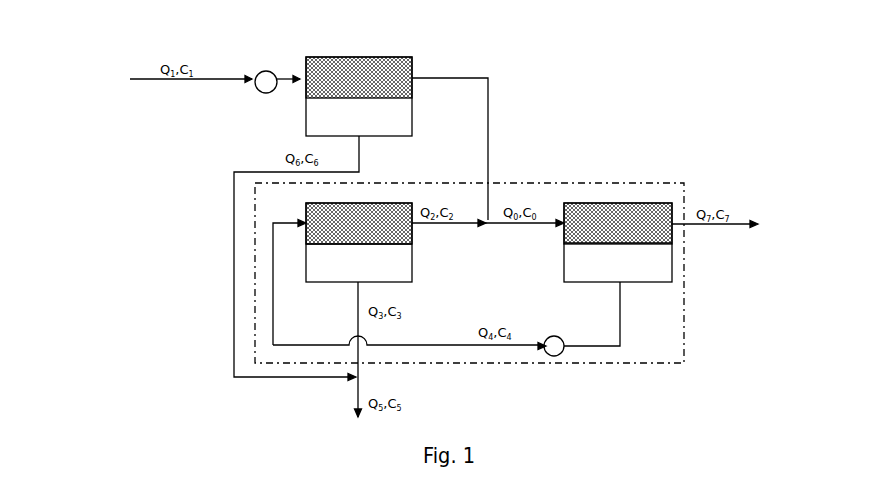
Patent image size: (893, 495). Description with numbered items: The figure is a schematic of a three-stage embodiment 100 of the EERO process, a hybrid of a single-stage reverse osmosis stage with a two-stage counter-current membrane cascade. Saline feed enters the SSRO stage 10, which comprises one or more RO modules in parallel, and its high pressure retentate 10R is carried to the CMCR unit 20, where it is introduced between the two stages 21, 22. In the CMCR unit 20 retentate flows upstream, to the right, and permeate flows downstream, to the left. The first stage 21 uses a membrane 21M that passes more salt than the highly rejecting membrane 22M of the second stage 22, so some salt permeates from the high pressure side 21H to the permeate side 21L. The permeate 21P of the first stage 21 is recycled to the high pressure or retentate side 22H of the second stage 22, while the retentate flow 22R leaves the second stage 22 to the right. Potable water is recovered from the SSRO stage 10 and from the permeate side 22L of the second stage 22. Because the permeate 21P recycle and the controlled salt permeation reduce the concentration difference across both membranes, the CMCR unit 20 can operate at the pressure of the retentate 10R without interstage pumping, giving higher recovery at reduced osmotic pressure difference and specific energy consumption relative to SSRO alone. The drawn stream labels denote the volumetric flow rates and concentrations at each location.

The water treatment system 100 is at (597, 65).
The SSRO stage 10 is at (353, 57).
The high pressure retentate 10R is at (489, 122).
The counter-current flow membrane cascade CMCR unit 20 is at (633, 183).
The stage 2 22 is at (306, 262).
The high pressure or retentate side of stage 2 22H is at (306, 214).
The highly rejecting membrane 22M is at (378, 245).
The permeate side of stage 2 22L is at (330, 267).
The retentate flow 22R is at (487, 220).
The stage 1 21 is at (673, 260).
The high pressure side of stage 1 21H is at (660, 217).
The membrane in stage 1 21M is at (578, 245).
The permeate side of stage 1 21L is at (590, 265).
The permeate 21P is at (622, 320).